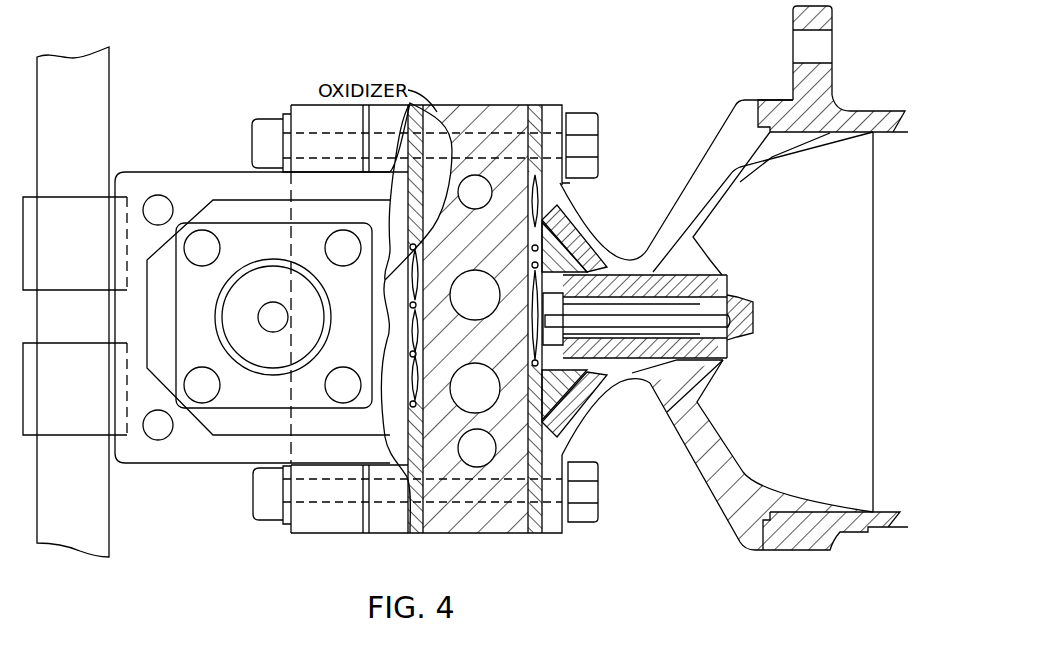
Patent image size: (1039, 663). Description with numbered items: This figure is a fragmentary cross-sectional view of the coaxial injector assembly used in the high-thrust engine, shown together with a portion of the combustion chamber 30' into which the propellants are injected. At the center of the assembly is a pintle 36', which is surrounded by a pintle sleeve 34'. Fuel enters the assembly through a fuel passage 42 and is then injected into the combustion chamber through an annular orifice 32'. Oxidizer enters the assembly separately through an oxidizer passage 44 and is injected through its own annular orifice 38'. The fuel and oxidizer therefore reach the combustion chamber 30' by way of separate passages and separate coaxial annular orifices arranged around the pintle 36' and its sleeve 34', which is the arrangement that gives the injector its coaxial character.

The combustion chamber 30' is at (734, 278).
The annular orifice 32' is at (659, 326).
The pintle sleeve 34' is at (649, 321).
The pintle 36' is at (671, 313).
The annular orifice 38' is at (758, 307).
The fuel passage 42 is at (483, 337).
The oxidizer passage 44 is at (495, 233).